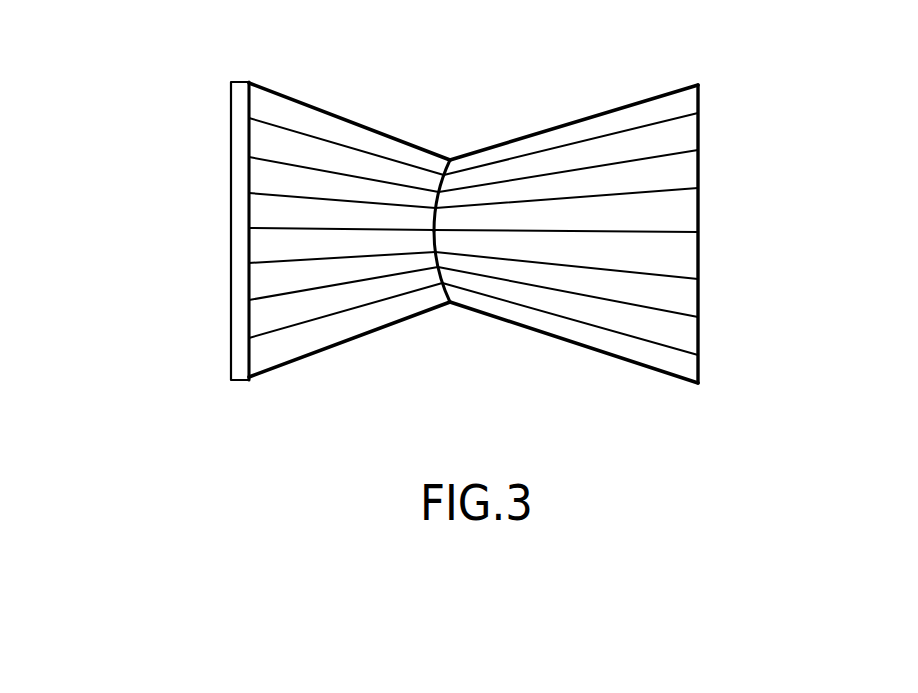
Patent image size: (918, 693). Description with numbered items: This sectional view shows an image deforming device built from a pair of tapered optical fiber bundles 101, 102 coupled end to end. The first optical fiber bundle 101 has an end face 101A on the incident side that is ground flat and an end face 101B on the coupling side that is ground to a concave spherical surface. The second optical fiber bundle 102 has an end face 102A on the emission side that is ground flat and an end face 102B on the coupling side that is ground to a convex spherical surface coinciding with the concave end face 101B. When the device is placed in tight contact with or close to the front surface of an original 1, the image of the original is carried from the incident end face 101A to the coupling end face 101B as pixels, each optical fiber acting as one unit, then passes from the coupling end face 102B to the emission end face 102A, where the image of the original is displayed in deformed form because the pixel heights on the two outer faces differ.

The original 1 is at (225, 208).
The tapered optical fiber bundle 101 is at (297, 97).
The end face on the incident side 101A is at (245, 317).
The end face on the coupling side 101B is at (437, 192).
The tapered optical fiber bundle 102 is at (645, 98).
The end face on the emission side 102A is at (700, 222).
The end face on the coupling side 102B is at (447, 268).